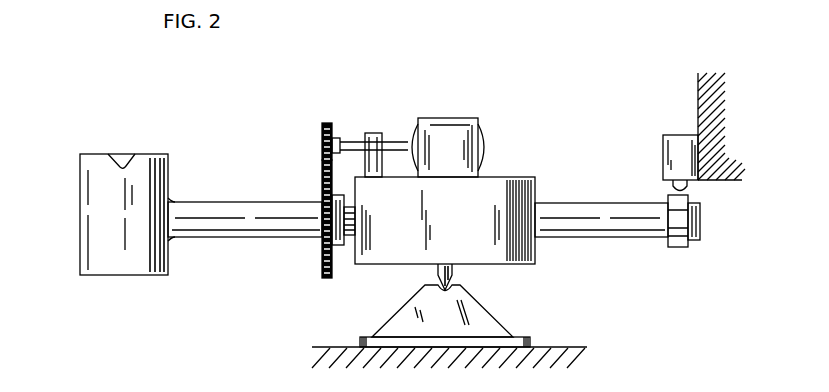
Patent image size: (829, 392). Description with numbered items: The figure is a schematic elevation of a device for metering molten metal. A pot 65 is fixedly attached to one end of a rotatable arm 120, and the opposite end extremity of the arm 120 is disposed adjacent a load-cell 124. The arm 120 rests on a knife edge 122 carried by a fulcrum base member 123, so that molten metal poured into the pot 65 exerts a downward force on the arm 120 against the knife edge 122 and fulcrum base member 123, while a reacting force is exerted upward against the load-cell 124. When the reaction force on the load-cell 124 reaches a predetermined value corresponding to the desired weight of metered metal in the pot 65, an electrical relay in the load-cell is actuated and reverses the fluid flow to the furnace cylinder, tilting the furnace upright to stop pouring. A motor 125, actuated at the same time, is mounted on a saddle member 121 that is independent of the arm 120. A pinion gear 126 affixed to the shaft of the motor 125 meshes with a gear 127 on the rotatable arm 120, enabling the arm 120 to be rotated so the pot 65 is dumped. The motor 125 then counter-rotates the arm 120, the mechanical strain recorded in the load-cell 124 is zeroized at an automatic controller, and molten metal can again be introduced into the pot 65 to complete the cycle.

The pot 65 is at (90, 218).
The rotatable arm 120 is at (233, 208).
The saddle member 121 is at (508, 176).
The knife edge 122 is at (458, 277).
The fulcrum base member 123 is at (488, 322).
The load-cell 124 is at (667, 158).
The motor 125 is at (442, 122).
The pinion gear 126 is at (325, 138).
The gear 127 is at (323, 255).